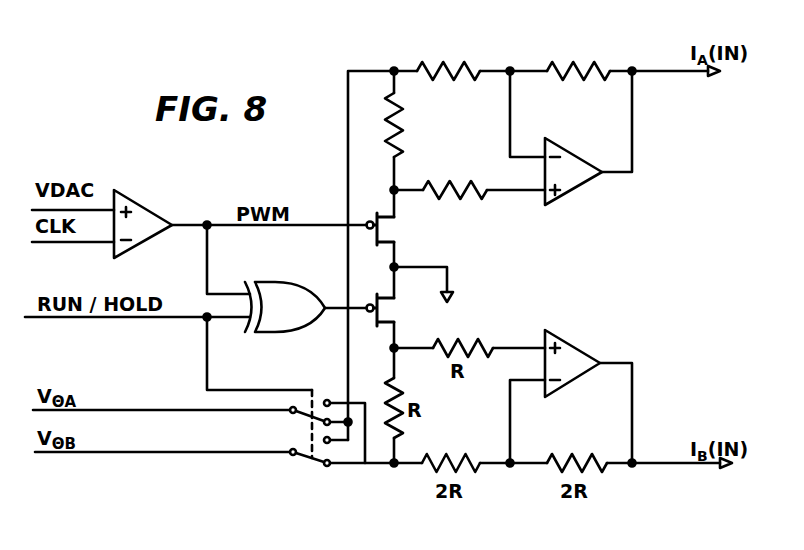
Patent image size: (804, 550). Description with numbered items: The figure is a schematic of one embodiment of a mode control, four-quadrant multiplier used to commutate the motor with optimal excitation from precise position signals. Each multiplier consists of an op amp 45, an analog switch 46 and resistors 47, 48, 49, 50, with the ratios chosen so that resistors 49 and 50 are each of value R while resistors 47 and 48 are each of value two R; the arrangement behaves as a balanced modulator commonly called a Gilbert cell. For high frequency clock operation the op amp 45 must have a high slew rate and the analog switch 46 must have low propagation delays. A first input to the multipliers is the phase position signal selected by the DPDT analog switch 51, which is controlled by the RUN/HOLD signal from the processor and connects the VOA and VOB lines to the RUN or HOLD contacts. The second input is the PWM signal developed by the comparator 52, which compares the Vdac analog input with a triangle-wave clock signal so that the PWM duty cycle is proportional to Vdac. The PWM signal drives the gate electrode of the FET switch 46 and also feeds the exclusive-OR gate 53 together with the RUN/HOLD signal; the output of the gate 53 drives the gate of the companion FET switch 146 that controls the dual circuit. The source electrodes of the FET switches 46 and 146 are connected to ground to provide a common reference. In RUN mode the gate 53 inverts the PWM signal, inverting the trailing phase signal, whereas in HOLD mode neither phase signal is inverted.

The op amp 45 is at (578, 155).
The analog switch 46 is at (386, 228).
The resistor 47 is at (436, 62).
The resistor 48 is at (569, 62).
The resistor 49 is at (397, 124).
The resistor 50 is at (455, 188).
The DPDT analog switch 51 is at (327, 398).
The comparator 52 is at (147, 210).
The exclusive-OR gate 53 is at (288, 281).
The companion FET switch 146 is at (386, 310).